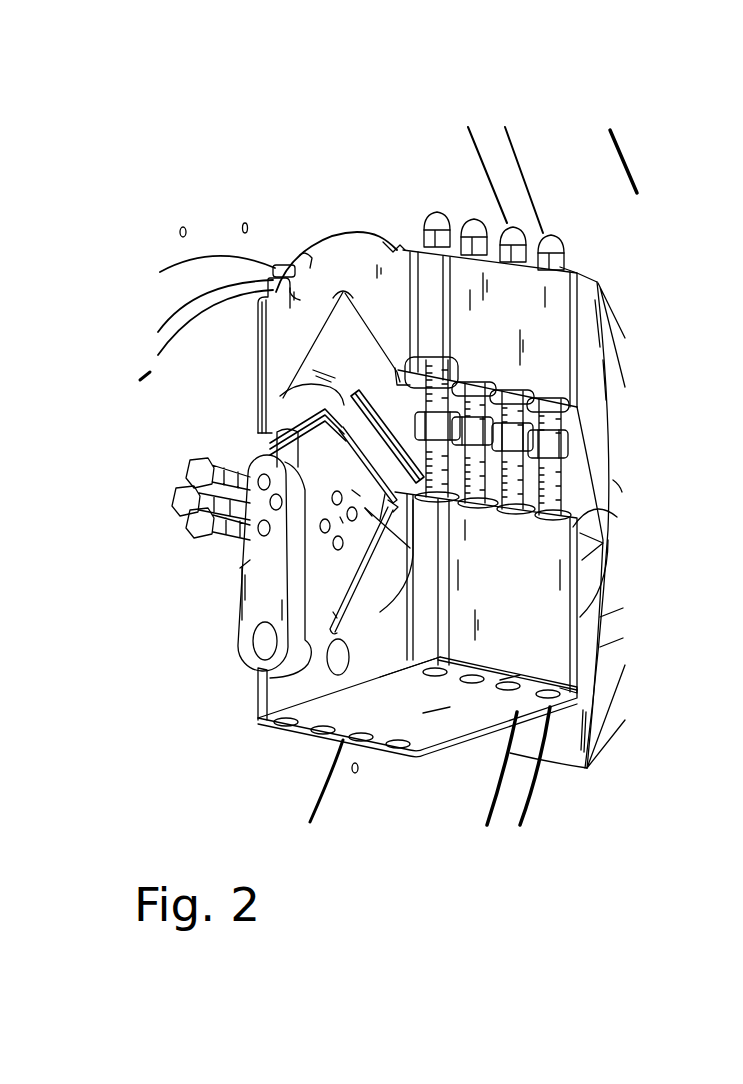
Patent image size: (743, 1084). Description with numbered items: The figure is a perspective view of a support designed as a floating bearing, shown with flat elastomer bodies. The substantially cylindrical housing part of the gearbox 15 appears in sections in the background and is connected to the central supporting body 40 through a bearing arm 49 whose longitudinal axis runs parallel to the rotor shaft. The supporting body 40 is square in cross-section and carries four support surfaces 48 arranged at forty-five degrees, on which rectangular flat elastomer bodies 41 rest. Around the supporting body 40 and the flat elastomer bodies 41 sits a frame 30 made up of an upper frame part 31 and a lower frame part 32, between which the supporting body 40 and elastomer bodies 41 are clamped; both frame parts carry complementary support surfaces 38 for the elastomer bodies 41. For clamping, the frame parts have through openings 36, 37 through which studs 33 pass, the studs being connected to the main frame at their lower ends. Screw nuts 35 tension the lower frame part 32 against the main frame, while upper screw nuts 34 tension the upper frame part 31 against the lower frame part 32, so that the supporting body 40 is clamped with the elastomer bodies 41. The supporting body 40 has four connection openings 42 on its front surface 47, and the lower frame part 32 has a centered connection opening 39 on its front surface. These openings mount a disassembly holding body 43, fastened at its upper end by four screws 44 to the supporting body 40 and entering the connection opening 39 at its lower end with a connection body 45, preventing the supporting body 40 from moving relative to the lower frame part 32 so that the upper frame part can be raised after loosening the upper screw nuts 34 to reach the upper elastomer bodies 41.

The gearbox 15 is at (566, 168).
The frame 30 is at (597, 268).
The upper frame part 31 is at (257, 340).
The lower frame part 32 is at (258, 720).
The studs 33 is at (430, 213).
The upper screw nuts 34 is at (455, 228).
The screw nuts 35 is at (560, 447).
The through opening 36 is at (603, 413).
The through opening 37 is at (567, 696).
The complementary support surfaces 38 is at (300, 267).
The connection opening 39 is at (335, 745).
The central supporting body 40 is at (300, 440).
The flat elastomer bodies 41 is at (392, 400).
The connection openings 42 is at (322, 506).
The disassembly holding body 43 is at (240, 568).
The screws 44 is at (228, 533).
The connection body 45 is at (257, 678).
The front surface 47 is at (457, 690).
The support surfaces 48 is at (340, 291).
The bearing arm 49 is at (597, 480).